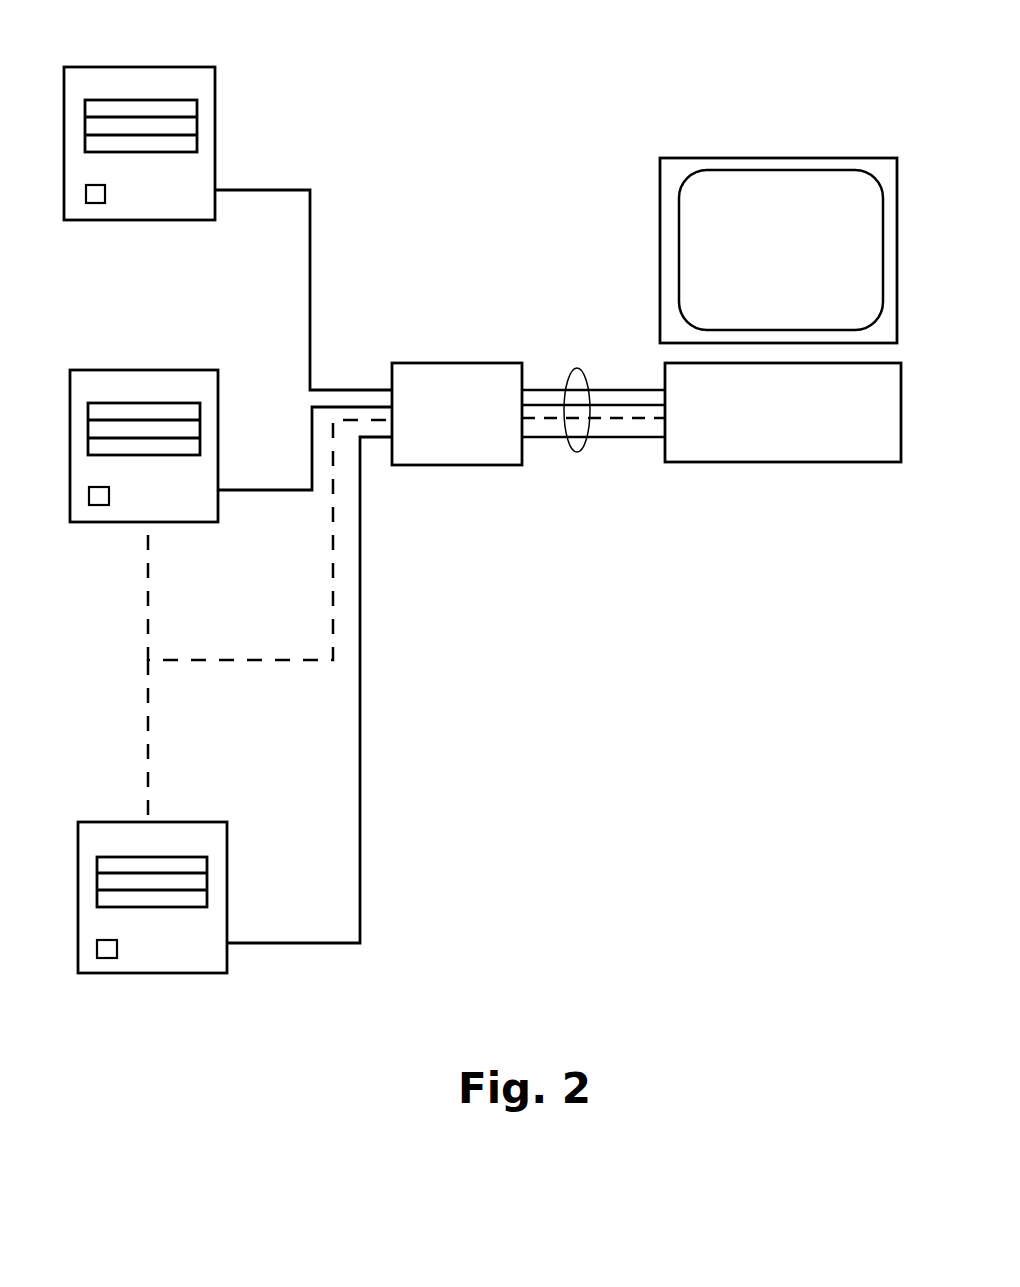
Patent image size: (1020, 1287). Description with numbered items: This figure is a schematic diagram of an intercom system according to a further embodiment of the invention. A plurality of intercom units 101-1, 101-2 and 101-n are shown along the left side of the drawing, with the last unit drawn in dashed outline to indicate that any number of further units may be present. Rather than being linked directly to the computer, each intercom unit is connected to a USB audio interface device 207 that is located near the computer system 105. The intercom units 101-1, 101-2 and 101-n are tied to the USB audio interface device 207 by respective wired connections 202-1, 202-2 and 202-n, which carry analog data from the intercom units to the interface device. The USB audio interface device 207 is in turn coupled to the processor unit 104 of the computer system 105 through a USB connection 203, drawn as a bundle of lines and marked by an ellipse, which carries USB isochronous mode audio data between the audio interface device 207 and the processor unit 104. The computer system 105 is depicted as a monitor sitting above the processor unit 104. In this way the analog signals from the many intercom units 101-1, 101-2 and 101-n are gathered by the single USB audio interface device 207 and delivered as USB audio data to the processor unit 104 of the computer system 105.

The intercom unit 101-1 is at (132, 67).
The intercom unit 101-2 is at (135, 370).
The intercom unit 101-n is at (180, 822).
The wired connection 202-1 is at (247, 190).
The wired connection 202-2 is at (287, 490).
The wired connection 202-n is at (265, 943).
The USB audio interface device 207 is at (440, 465).
The USB connection 203 is at (577, 452).
The processor unit 104 is at (767, 462).
The computer system 105 is at (862, 97).